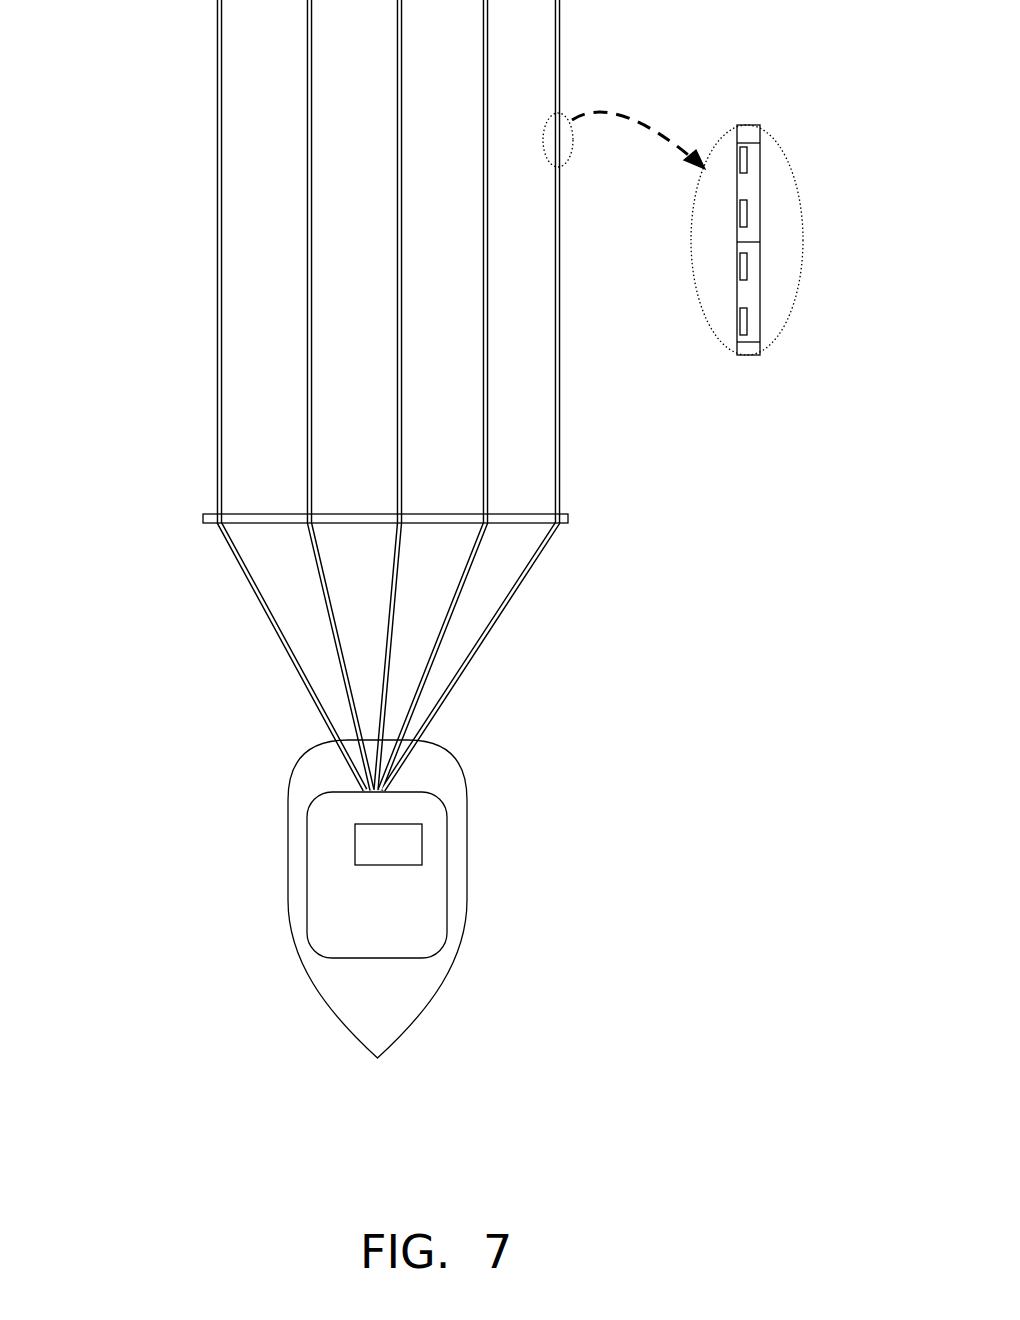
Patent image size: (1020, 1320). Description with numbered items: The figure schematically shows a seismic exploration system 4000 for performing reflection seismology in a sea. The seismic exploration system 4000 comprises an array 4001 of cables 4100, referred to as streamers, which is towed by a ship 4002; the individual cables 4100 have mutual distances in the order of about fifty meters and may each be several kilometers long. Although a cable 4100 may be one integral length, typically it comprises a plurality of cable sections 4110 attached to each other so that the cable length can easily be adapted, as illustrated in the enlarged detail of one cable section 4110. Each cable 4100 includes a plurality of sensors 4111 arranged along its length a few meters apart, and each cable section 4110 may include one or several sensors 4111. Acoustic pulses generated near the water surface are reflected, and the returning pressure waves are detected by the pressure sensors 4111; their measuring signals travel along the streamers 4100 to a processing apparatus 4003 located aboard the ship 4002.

The seismic exploration system 4000 is at (676, 630).
The array 4001 is at (165, 120).
The cables 4100 is at (394, 318).
The cable sections 4110 is at (759, 290).
The sensors 4111 is at (737, 225).
The ship 4002 is at (482, 895).
The processing apparatus 4003 is at (422, 850).